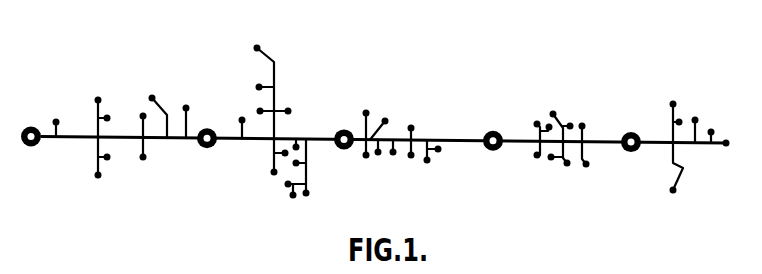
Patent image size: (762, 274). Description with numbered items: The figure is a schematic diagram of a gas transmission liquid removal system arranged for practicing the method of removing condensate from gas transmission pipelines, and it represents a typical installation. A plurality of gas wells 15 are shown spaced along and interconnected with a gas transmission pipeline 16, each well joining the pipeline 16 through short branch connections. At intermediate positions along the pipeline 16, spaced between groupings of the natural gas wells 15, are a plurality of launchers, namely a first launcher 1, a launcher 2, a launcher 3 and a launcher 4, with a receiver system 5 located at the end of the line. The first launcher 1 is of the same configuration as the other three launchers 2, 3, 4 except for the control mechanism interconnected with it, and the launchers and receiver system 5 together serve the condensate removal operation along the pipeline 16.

The first launcher 1 is at (631, 123).
The launcher 2 is at (493, 127).
The launcher 3 is at (344, 126).
The launcher 4 is at (207, 125).
The receiver system 5 is at (31, 124).
The gas wells 15 is at (152, 98).
The gas transmission pipeline 16 is at (452, 140).